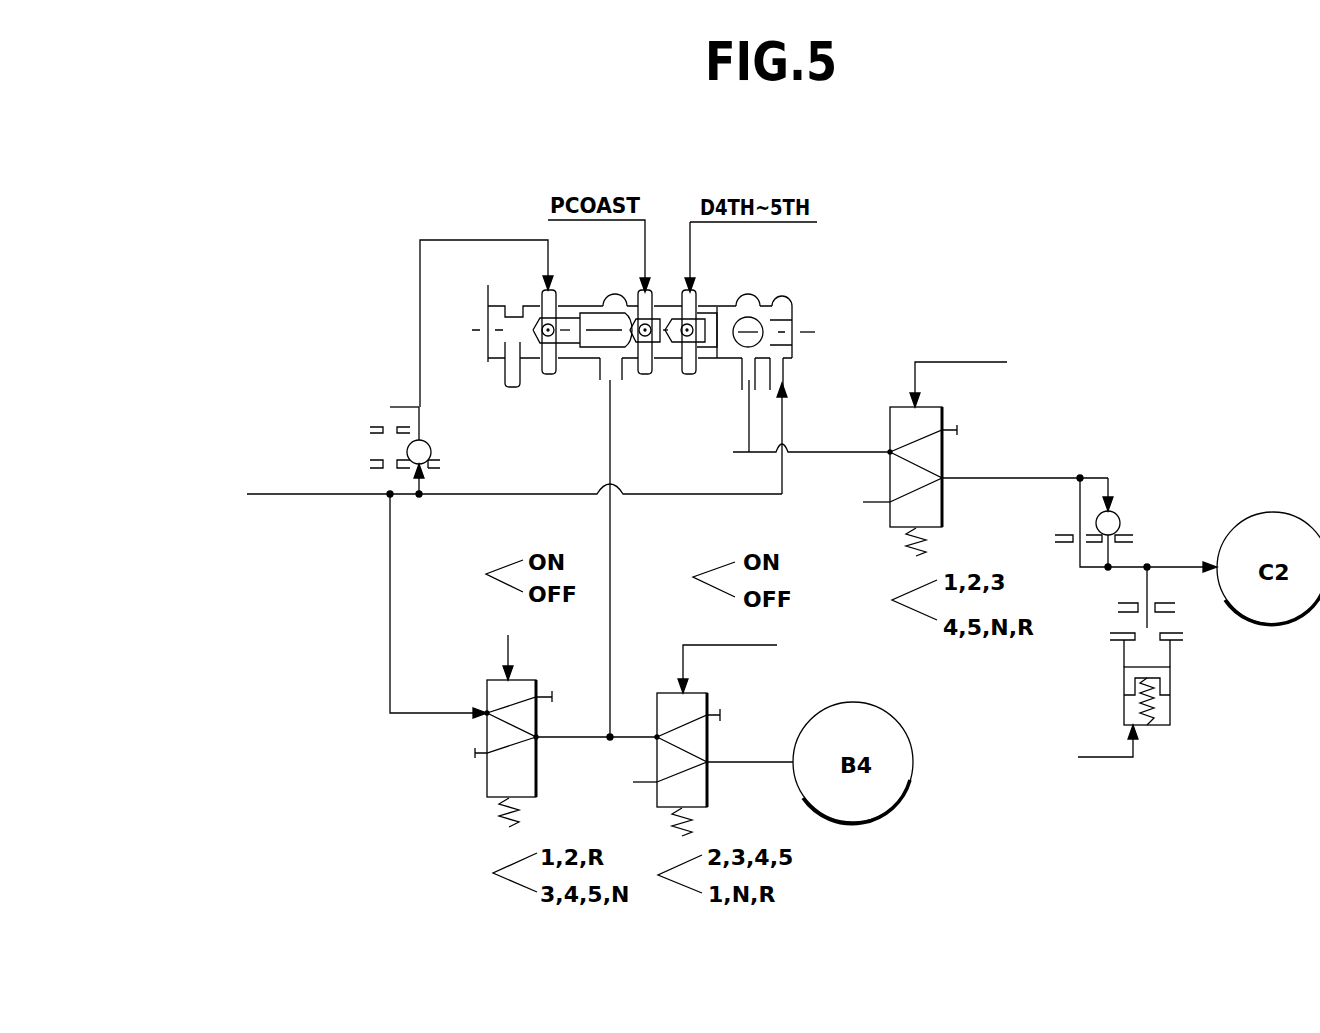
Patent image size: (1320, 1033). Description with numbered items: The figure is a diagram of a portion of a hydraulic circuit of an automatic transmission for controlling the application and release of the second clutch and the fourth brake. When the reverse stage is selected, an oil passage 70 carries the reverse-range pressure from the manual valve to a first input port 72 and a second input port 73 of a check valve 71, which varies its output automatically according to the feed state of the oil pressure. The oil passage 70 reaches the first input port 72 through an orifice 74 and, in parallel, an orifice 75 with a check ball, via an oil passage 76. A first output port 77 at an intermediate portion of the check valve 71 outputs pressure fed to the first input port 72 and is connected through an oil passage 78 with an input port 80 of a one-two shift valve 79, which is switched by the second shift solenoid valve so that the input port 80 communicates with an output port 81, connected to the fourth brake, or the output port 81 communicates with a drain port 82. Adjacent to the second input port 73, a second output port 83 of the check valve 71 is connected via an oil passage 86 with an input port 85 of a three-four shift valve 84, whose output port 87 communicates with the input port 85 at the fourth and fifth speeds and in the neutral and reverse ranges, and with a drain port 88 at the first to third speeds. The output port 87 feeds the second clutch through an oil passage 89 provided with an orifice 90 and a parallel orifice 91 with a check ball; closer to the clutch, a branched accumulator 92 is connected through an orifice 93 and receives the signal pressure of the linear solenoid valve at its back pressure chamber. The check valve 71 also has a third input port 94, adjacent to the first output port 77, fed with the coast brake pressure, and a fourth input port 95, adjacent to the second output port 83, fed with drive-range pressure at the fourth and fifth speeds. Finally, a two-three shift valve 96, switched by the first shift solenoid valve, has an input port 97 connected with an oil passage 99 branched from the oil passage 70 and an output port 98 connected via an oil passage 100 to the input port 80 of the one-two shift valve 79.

The oil passage 70 is at (302, 492).
The check valve 71 is at (803, 290).
The first input port 72 is at (557, 287).
The second input port 73 is at (793, 377).
The orifice 74 is at (370, 462).
The orifice with check ball 75 is at (432, 452).
The oil passage 76 is at (420, 320).
The first output port 77 is at (613, 374).
The oil passage 78 is at (610, 464).
The 1-2 shift valve 79 is at (744, 690).
The input port 80 is at (656, 737).
The output port 81 is at (708, 762).
The drain port 82 is at (657, 785).
The second output port 83 is at (743, 380).
The 3-4 shift valve 84 is at (965, 412).
The input port 85 is at (890, 452).
The oil passage 86 is at (750, 438).
The output port 87 is at (943, 478).
The drain port 88 is at (890, 505).
The oil passage 89 is at (1080, 478).
The orifice 90 is at (1063, 535).
The orifice with check ball 91 is at (1120, 535).
The accumulator 92 is at (1170, 708).
The orifice 93 is at (1133, 605).
The third input port 94 is at (640, 287).
The fourth input port 95 is at (693, 290).
The 2-3 shift valve 96 is at (455, 799).
The input port 97 is at (486, 713).
The output port 98 is at (538, 737).
The oil passage 99 is at (390, 630).
The oil passage 100 is at (578, 740).